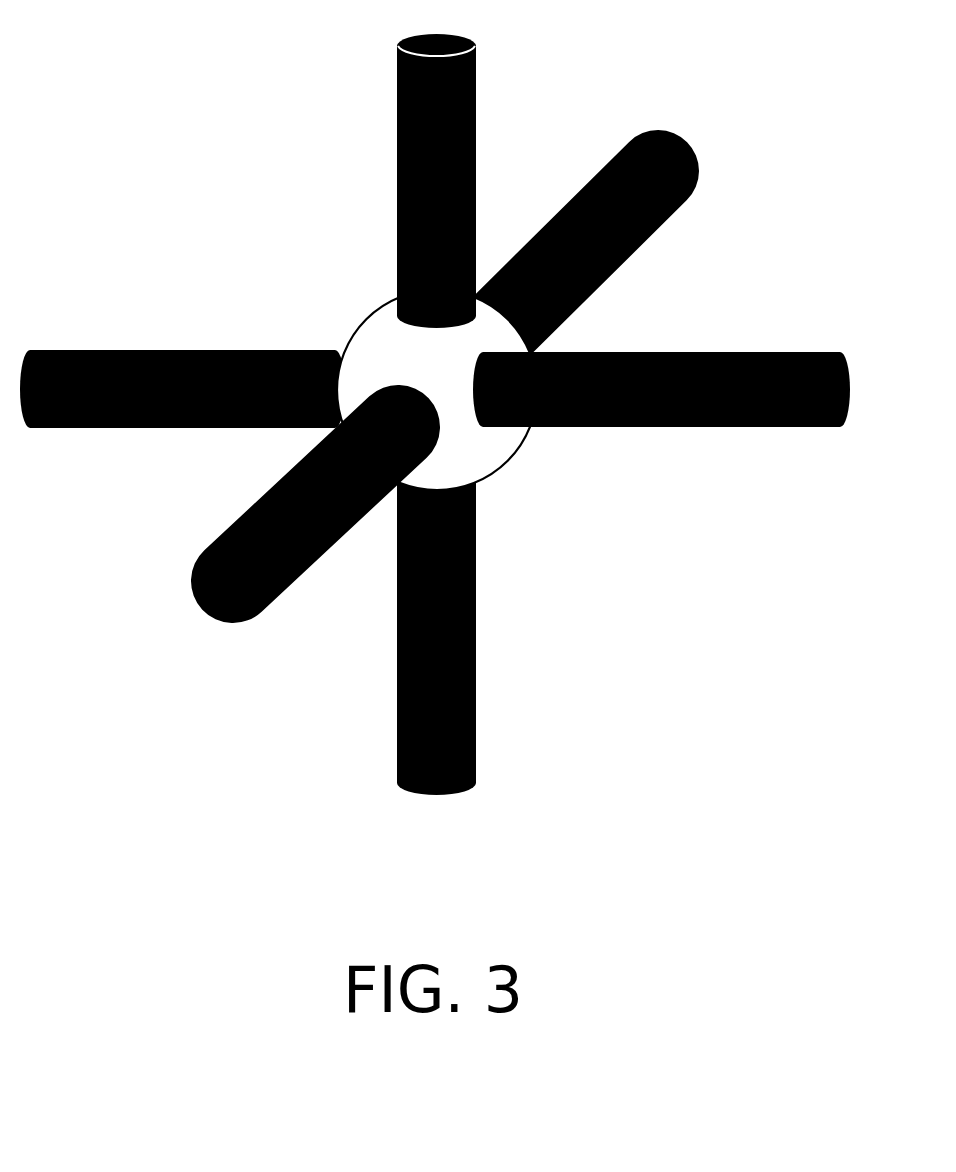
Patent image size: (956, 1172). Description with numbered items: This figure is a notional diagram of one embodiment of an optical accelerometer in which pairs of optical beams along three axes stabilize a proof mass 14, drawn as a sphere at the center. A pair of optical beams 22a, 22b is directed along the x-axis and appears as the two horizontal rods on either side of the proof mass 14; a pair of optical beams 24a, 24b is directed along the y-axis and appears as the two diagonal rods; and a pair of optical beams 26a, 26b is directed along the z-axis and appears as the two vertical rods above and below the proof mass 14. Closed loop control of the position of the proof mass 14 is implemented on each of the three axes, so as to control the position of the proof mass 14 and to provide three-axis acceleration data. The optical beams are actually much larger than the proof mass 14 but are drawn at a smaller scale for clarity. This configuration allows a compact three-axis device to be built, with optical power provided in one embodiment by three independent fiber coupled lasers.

The proof mass 14 is at (332, 288).
The optical beam 22a is at (158, 350).
The optical beam 22b is at (712, 353).
The optical beam 24a is at (193, 593).
The optical beam 24b is at (700, 168).
The optical beam 26a is at (475, 648).
The optical beam 26b is at (397, 72).